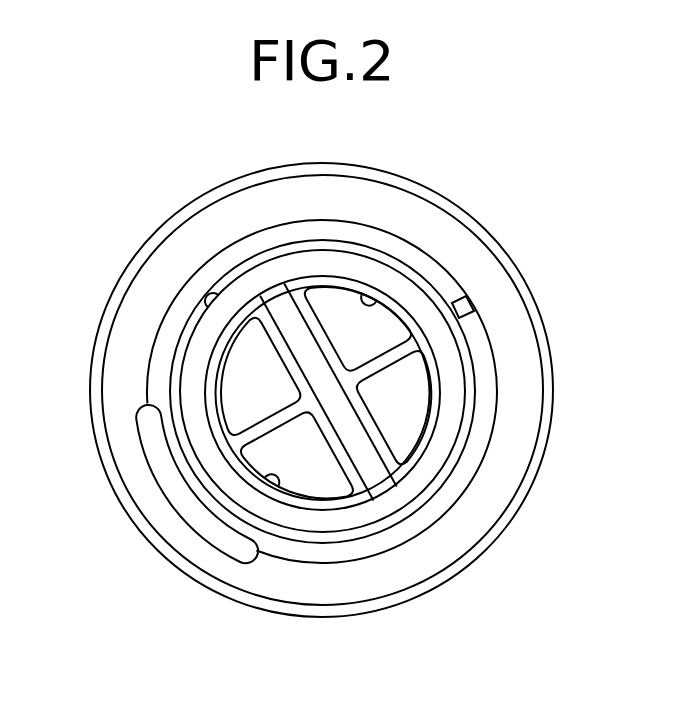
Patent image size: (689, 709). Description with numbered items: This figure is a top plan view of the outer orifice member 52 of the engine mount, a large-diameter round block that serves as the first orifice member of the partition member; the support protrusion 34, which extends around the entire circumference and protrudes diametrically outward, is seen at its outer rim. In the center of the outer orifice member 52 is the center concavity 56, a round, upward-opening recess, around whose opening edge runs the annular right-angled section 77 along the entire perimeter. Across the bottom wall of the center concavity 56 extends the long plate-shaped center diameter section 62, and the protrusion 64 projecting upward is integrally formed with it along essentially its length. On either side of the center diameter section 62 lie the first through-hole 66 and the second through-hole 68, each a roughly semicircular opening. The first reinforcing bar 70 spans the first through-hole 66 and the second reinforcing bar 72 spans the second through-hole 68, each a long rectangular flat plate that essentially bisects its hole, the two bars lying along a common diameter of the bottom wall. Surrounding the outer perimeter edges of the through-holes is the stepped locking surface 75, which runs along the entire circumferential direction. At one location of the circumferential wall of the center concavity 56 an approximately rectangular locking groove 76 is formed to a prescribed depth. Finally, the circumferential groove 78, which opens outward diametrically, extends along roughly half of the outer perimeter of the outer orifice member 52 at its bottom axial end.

The support protrusion 34 is at (116, 302).
The outer orifice member 52 is at (200, 168).
The center concavity 56 is at (212, 296).
The center diameter section 62 is at (339, 429).
The protrusion 64 is at (340, 425).
The first through-hole 66 is at (369, 296).
The second through-hole 68 is at (282, 482).
The first reinforcing bar 70 is at (381, 371).
The second reinforcing bar 72 is at (262, 408).
The stepped locking surface 75 is at (378, 434).
The locking groove 76 is at (478, 302).
The annular right-angled section 77 is at (275, 232).
The circumferential groove 78 is at (178, 507).